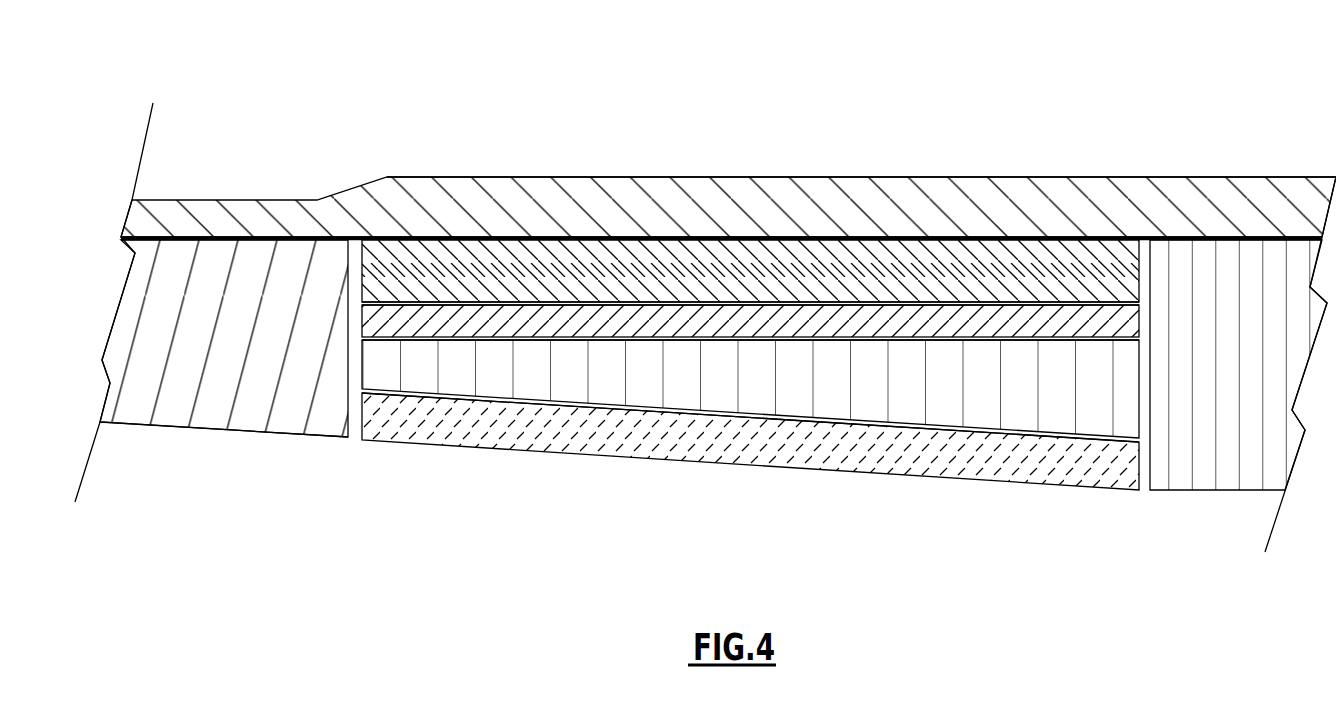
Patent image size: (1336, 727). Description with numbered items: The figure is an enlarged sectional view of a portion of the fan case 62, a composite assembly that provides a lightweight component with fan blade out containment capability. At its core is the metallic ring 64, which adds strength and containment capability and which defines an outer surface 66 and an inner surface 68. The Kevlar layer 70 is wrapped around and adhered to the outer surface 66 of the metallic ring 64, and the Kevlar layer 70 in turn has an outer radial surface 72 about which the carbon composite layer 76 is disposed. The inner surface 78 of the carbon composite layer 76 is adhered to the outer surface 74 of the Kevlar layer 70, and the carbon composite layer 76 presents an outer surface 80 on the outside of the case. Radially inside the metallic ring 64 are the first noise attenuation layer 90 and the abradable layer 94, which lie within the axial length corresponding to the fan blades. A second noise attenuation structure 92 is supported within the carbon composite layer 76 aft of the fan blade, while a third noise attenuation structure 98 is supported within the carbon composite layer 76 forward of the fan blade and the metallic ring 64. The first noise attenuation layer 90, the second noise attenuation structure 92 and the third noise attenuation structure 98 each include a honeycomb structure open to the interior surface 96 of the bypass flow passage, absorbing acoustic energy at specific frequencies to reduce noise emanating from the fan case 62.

The fan case 62 is at (1141, 61).
The metallic ring 64 is at (855, 318).
The outer surface of the metallic ring 66 is at (796, 298).
The inner surface of the metallic ring 68 is at (657, 347).
The Kevlar layer 70 is at (642, 268).
The outer radial surface of the Kevlar layer 72 is at (758, 233).
The outer surface of the Kevlar layer 74 is at (605, 306).
The carbon composite layer 76 is at (473, 197).
The inner surface of the composite layer 78 is at (547, 245).
The outer surface of the carbon composite layer 80 is at (614, 170).
The first noise attenuation layer 90 is at (895, 392).
The second noise attenuation structure 92 is at (1222, 453).
The abradable layer 94 is at (685, 437).
The interior surface of the bypass flow passage 96 is at (294, 458).
The third noise attenuation structure 98 is at (215, 397).